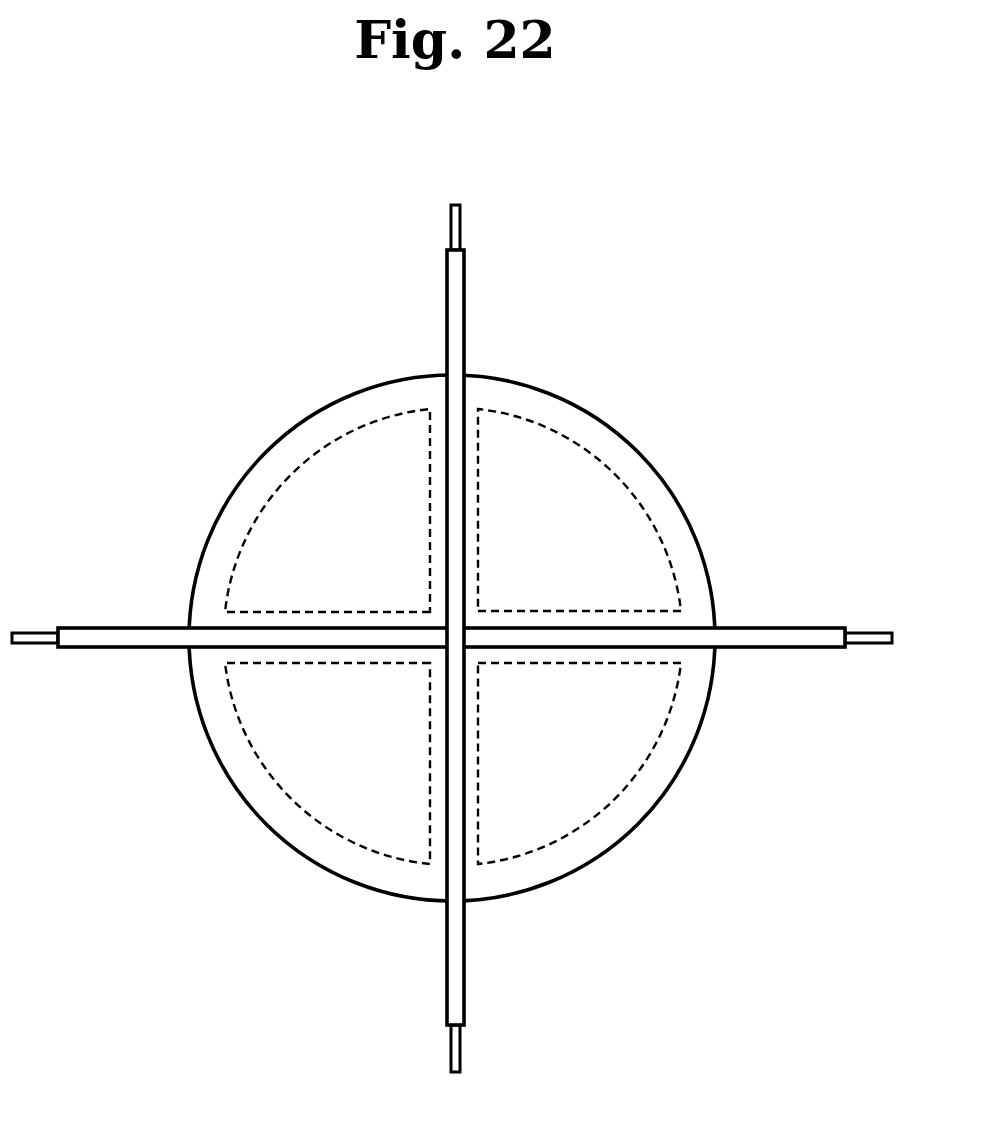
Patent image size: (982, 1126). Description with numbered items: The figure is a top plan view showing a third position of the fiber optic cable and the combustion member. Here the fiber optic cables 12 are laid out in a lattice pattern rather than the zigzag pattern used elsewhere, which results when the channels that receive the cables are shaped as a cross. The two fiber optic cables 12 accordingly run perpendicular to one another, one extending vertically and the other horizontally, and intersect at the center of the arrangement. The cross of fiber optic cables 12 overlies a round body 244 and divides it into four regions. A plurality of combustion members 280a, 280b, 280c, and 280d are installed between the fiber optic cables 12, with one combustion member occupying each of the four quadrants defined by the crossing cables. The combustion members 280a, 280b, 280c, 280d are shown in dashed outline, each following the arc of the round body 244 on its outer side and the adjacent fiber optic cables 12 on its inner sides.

The fiber optic cable 12 is at (465, 280).
The circular plate 244 is at (665, 478).
The combustion member 280a is at (647, 547).
The combustion member 280b is at (647, 726).
The combustion member 280c is at (257, 727).
The combustion member 280d is at (257, 550).